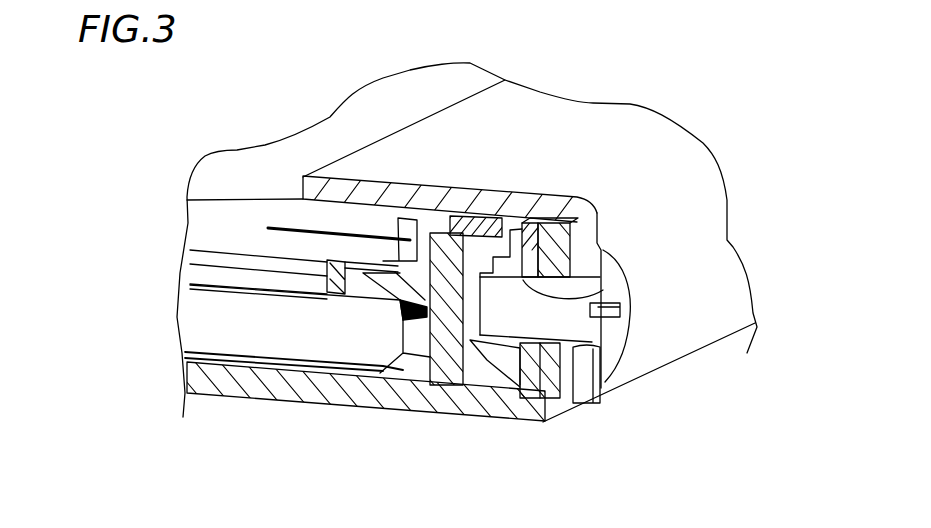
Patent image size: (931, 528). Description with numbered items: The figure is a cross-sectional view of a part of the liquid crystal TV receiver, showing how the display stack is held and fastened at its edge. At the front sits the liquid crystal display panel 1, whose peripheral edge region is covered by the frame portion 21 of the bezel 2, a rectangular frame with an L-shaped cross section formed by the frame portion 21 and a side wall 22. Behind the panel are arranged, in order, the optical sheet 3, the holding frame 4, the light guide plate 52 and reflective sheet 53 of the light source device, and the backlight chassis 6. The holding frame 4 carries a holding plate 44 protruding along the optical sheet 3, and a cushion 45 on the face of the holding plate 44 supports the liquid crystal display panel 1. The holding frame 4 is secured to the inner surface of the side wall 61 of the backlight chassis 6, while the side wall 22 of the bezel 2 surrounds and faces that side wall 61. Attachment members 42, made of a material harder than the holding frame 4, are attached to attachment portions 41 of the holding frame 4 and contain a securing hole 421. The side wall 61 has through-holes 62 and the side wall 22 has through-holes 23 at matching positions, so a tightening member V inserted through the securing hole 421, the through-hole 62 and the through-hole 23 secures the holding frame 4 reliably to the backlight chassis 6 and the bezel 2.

The liquid crystal display panel 1 is at (190, 222).
The bezel 2 is at (670, 361).
The optical sheet 3 is at (180, 267).
The holding frame 4 is at (487, 386).
The backlight chassis 6 is at (300, 401).
The frame portion 21 is at (430, 140).
The side wall 22 is at (710, 322).
The through-holes 23 is at (587, 405).
The attachment portions 41 is at (422, 325).
The attachment members 42 is at (472, 216).
The holding plate 44 is at (363, 283).
The cushion 45 is at (397, 217).
The light guide plate 52 is at (187, 317).
The reflective sheet 53 is at (180, 354).
The side wall 61 is at (557, 223).
The through-holes 62 is at (553, 400).
The securing hole 421 is at (603, 290).
The tightening member V is at (628, 347).